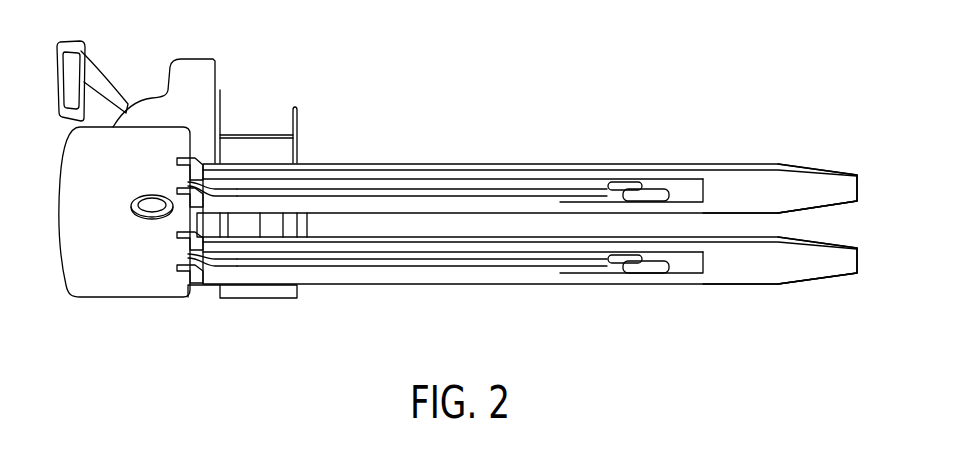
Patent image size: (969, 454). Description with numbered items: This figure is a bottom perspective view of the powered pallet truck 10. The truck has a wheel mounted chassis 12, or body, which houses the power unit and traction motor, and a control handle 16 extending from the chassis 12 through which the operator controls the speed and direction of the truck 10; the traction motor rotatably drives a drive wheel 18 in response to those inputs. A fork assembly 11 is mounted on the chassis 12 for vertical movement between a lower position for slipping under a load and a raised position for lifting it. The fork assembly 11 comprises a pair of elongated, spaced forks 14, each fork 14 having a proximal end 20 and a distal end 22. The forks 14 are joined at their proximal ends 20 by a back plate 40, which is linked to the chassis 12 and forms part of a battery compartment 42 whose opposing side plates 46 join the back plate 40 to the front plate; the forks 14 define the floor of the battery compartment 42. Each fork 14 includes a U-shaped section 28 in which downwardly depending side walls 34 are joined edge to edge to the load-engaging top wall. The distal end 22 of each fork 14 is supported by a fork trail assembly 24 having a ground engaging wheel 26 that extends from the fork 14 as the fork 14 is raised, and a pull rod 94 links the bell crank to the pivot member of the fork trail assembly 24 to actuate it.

The powered pallet truck 10 is at (388, 88).
The fork assembly 11 is at (557, 340).
The chassis 12 is at (72, 296).
The fork 14 is at (793, 165).
The control handle 16 is at (100, 70).
The drive wheel 18 is at (148, 228).
The proximal end 20 is at (232, 163).
The distal end 22 is at (856, 178).
The fork trail assembly 24 is at (643, 175).
The ground engaging wheel 26 is at (670, 195).
The U-shaped section 28 is at (530, 245).
The side wall 34 is at (752, 210).
The back plate 40 is at (222, 100).
The battery compartment 42 is at (298, 110).
The side plate 46 is at (268, 133).
The pull rod 94 is at (465, 196).